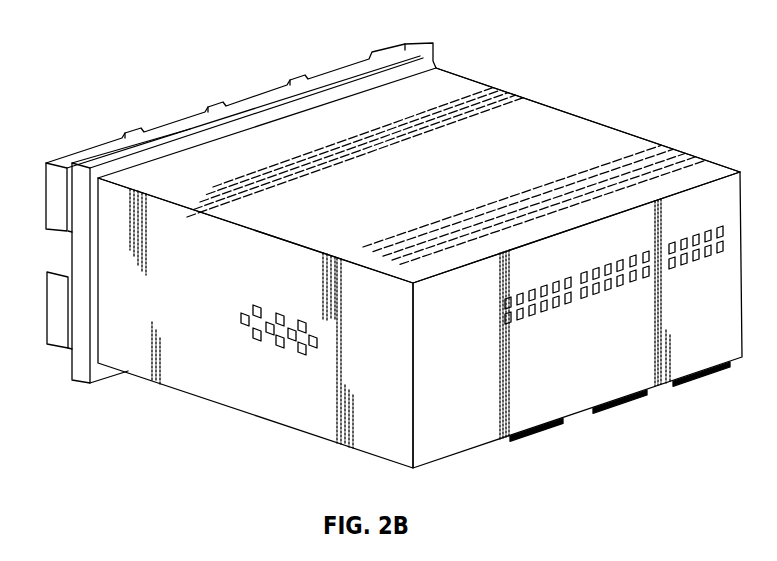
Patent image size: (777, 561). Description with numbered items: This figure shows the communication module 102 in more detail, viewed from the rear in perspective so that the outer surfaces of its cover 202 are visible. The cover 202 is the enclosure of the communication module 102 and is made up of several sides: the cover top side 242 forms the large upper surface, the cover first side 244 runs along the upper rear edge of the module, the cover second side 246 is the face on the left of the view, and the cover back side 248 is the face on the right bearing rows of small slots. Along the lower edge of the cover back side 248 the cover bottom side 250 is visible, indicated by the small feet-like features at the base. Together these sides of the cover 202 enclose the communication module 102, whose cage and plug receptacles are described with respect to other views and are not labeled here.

The communication module 102 is at (646, 117).
The cover 202 is at (500, 106).
The cover top side 242 is at (435, 182).
The cover first side 244 is at (578, 102).
The cover second side 246 is at (213, 314).
The cover back side 248 is at (603, 383).
The cover bottom side 250 is at (576, 434).